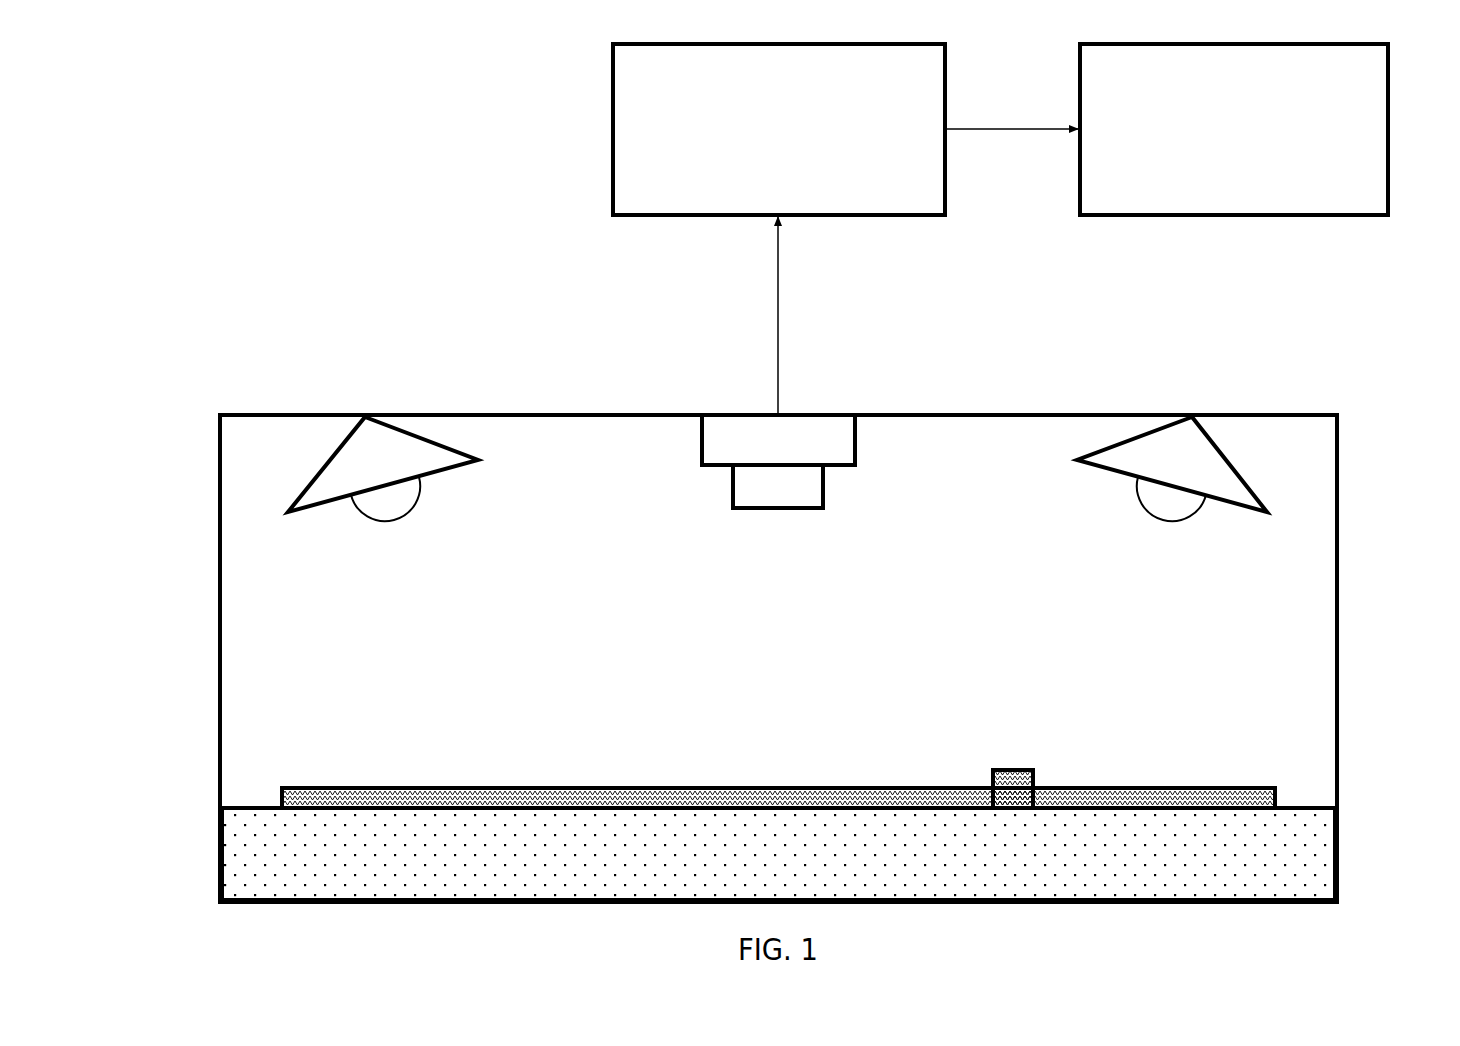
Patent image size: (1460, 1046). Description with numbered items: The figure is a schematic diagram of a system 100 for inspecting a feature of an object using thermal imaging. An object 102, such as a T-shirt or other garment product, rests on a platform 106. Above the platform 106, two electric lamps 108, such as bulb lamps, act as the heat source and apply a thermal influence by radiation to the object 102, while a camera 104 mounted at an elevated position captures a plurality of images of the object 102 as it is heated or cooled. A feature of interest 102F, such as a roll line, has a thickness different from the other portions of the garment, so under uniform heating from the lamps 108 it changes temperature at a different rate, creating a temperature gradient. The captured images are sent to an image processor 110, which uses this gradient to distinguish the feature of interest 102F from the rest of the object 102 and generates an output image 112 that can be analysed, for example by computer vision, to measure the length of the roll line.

The system 100 is at (222, 130).
The object 102 is at (363, 788).
The feature of interest 102F is at (1037, 777).
The imager 104 is at (775, 440).
The platform 106 is at (383, 873).
The electric lamps 108 is at (372, 460).
The image processor 110 is at (795, 229).
The output image 112 is at (1167, 129).